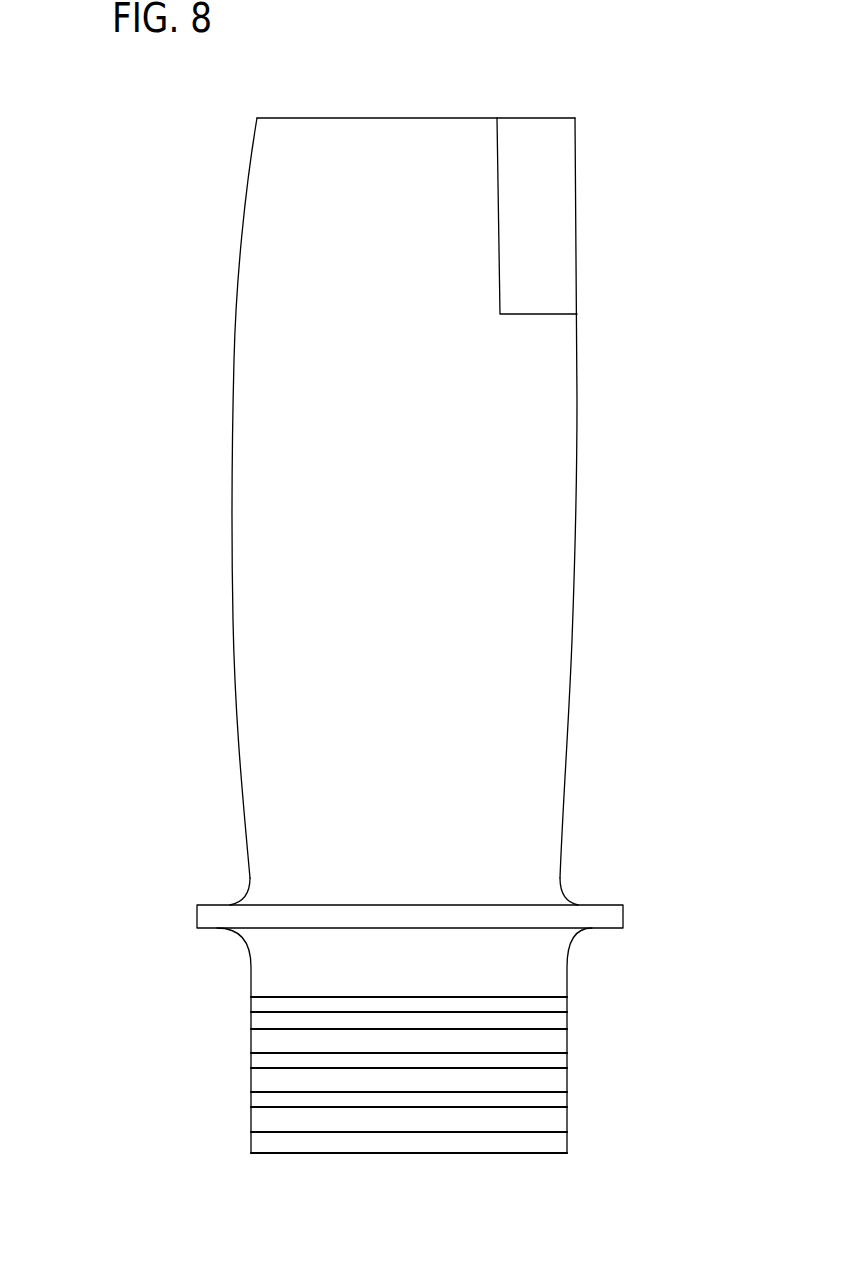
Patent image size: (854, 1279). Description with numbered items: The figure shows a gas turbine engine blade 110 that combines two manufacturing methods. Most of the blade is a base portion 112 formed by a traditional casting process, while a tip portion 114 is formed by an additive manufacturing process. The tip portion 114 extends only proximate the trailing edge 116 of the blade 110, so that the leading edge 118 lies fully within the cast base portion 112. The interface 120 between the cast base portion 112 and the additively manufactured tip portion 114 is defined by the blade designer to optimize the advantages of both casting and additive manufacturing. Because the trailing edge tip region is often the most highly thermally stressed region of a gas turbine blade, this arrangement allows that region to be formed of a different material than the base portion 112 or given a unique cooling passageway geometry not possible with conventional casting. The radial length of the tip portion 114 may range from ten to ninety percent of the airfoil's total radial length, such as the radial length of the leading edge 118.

The gas turbine engine blade 110 is at (629, 76).
The base portion 112 is at (574, 602).
The tip portion 114 is at (575, 203).
The trailing edge 116 is at (589, 450).
The leading edge 118 is at (223, 449).
The interface 120 is at (497, 215).